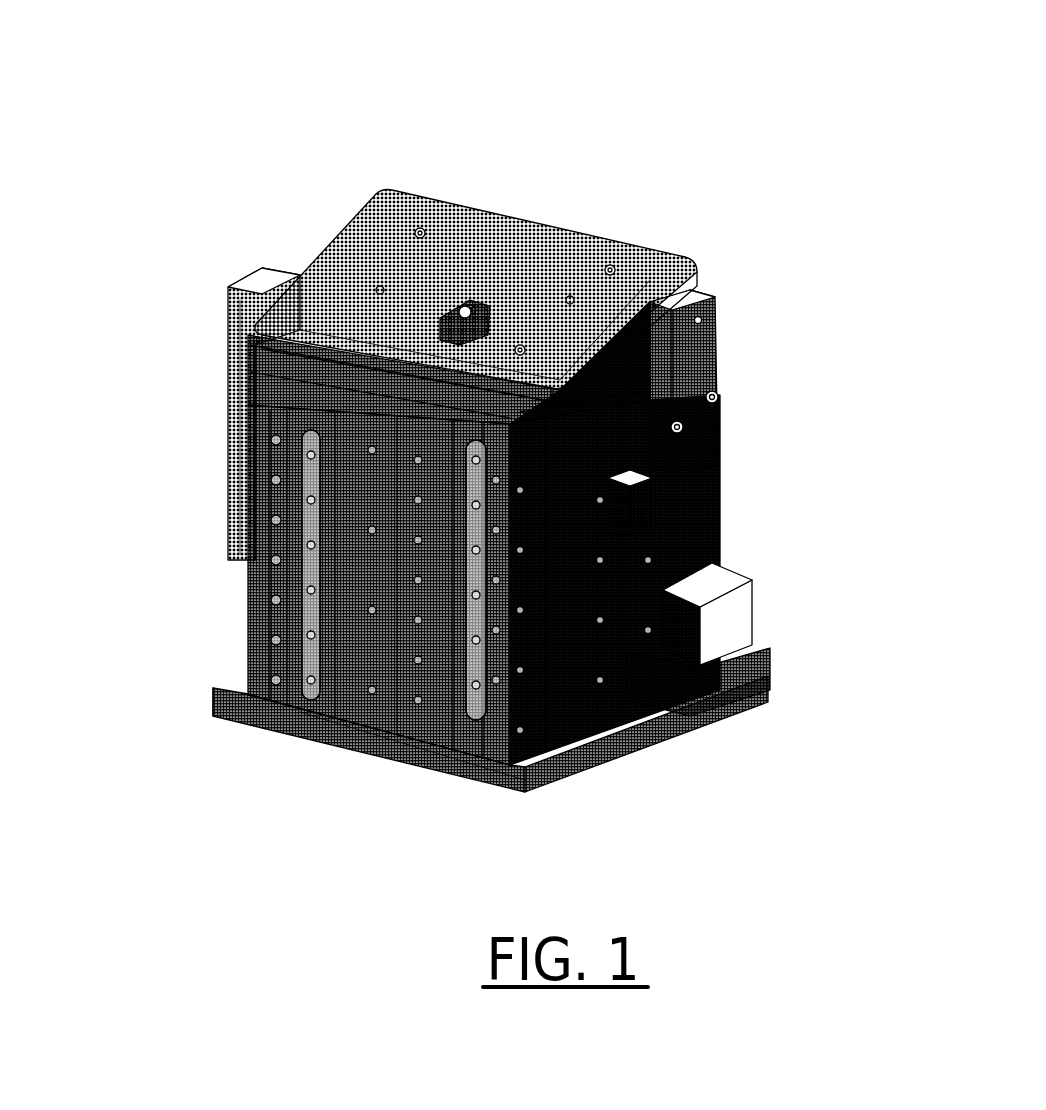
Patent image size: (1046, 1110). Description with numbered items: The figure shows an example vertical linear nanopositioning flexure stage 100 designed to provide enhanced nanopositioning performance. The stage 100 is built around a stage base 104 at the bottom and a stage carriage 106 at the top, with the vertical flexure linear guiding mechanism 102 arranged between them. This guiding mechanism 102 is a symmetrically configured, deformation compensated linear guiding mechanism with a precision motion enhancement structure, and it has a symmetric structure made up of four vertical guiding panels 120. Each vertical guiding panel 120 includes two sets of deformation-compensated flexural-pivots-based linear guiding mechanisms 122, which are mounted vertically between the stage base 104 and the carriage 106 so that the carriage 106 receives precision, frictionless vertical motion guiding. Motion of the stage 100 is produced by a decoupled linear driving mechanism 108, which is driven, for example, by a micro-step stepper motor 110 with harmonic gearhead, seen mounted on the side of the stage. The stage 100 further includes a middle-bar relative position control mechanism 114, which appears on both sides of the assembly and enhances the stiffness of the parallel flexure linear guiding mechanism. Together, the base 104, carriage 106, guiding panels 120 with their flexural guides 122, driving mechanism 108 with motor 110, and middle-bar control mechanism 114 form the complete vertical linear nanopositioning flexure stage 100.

The vertical linear nanopositioning flexure stage 100 is at (583, 141).
The deformation compensated linear guiding mechanism 102 is at (135, 688).
The stage base 104 is at (633, 733).
The stage carriage 106 is at (322, 262).
The decoupled linear driving mechanism 108 is at (438, 333).
The micro-step stepper motor 110 is at (727, 583).
The middle-bar relative position control mechanism 114 is at (826, 274).
The vertical guiding panel 120 is at (558, 625).
The deformation-compensated flexural-pivots-based linear guiding mechanism 122 is at (442, 637).